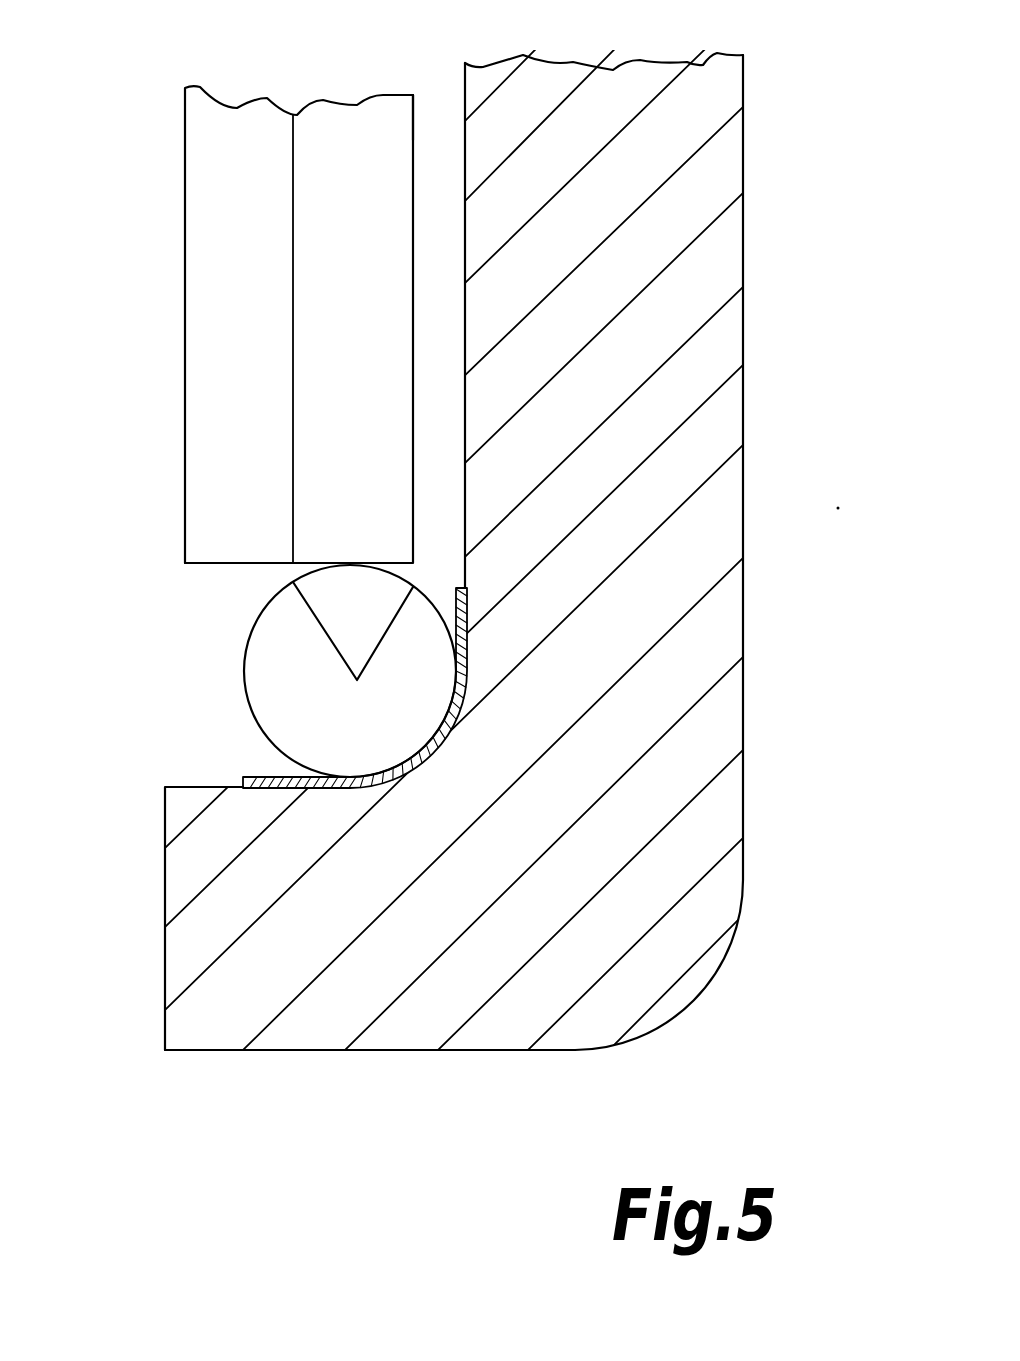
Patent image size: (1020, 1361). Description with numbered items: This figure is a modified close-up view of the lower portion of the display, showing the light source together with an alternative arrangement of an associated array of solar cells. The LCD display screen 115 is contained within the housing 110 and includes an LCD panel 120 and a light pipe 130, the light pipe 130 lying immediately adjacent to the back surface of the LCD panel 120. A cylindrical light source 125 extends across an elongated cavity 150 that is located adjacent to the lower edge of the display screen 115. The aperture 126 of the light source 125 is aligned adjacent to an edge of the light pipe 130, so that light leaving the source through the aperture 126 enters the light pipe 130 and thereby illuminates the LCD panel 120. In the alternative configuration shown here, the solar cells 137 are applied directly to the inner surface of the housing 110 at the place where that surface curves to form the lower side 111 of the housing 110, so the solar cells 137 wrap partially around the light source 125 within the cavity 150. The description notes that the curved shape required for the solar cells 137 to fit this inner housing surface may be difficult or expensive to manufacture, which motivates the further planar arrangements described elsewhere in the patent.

The housing 110 is at (798, 170).
The lower side of housing 111 is at (492, 1070).
The LCD display screen 115 is at (126, 210).
The LCD panel 120 is at (212, 290).
The cylindrical light source 125 is at (243, 658).
The aperture 126 is at (353, 578).
The light pipe 130 is at (355, 123).
The solar cells 137 is at (253, 780).
The elongated cavity 150 is at (215, 609).